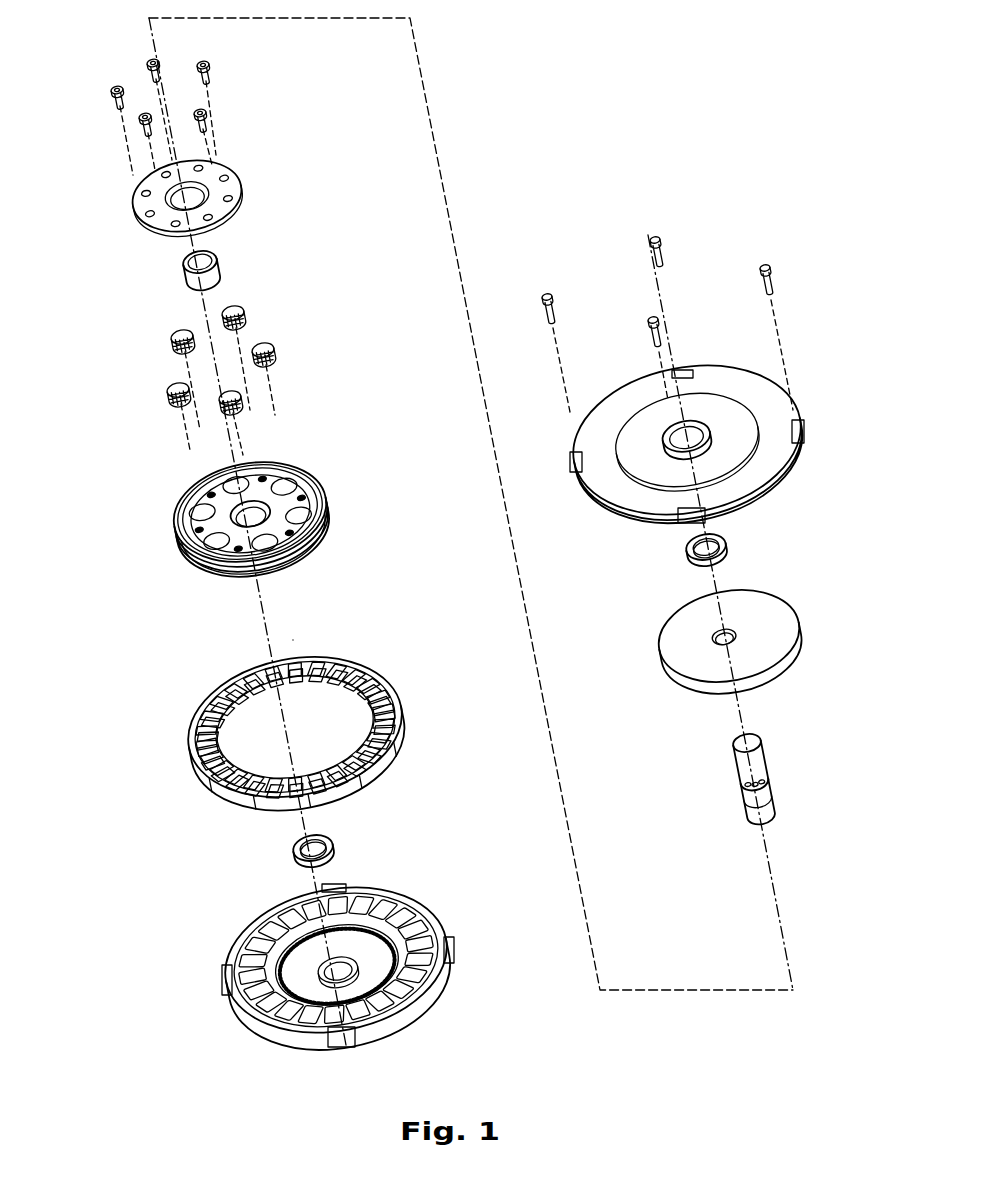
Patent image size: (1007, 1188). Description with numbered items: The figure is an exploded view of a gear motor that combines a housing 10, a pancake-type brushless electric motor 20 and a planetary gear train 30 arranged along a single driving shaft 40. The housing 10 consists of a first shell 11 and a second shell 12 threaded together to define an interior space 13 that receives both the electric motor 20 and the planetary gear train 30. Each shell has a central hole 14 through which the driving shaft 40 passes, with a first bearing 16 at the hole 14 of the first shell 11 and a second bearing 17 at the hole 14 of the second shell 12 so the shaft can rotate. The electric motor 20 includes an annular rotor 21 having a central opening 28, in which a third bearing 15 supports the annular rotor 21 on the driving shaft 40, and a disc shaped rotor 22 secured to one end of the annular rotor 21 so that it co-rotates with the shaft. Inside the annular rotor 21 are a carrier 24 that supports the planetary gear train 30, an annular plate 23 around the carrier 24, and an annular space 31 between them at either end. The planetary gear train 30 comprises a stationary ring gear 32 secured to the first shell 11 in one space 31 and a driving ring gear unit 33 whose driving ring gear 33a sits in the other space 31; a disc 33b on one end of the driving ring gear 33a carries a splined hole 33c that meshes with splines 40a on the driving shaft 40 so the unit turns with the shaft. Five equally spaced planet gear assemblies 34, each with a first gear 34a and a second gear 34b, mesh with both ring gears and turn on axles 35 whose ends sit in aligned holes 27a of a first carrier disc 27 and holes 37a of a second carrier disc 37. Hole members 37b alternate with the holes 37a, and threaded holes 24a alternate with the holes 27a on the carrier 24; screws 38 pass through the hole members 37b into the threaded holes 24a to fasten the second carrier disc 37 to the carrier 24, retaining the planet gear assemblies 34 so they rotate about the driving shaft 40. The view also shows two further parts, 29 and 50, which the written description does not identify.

The housing 10 is at (588, 406).
The first shell 11 is at (298, 1036).
The second shell 12 is at (755, 396).
The space 13 is at (248, 934).
The central hole 14 is at (335, 962).
The third bearing 15 is at (215, 258).
The first bearing 16 is at (331, 841).
The second bearing 17 is at (730, 557).
The electric motor 20 is at (177, 652).
The annular rotor 21 is at (190, 483).
The disc shaped rotor 22 is at (250, 576).
The annular plate 23 is at (306, 502).
The carrier 24 is at (200, 521).
The threaded holes 24a is at (284, 551).
The first carrier disc 27 is at (190, 538).
The holes 27a is at (180, 556).
The central opening 28 is at (273, 494).
The magnet ring 29 is at (396, 690).
The planetary gear train 30 is at (292, 67).
The annular space 31 is at (206, 474).
The stationary ring gear 32 is at (352, 942).
The driving ring gear unit 33 is at (658, 696).
The driving ring gear 33a is at (791, 640).
The disc 33b is at (681, 646).
The splined hole 33c is at (716, 630).
The planet gear assembly 34 is at (390, 298).
The first gear 34a is at (272, 358).
The second gear 34b is at (271, 343).
The axle 35 is at (176, 332).
The second carrier disc 37 is at (140, 197).
The holes 37a is at (140, 212).
The hole members 37b is at (227, 165).
The screws 38 is at (116, 99).
The driving shaft 40 is at (771, 776).
The splines 40a is at (745, 793).
The cap screws 50 is at (650, 264).